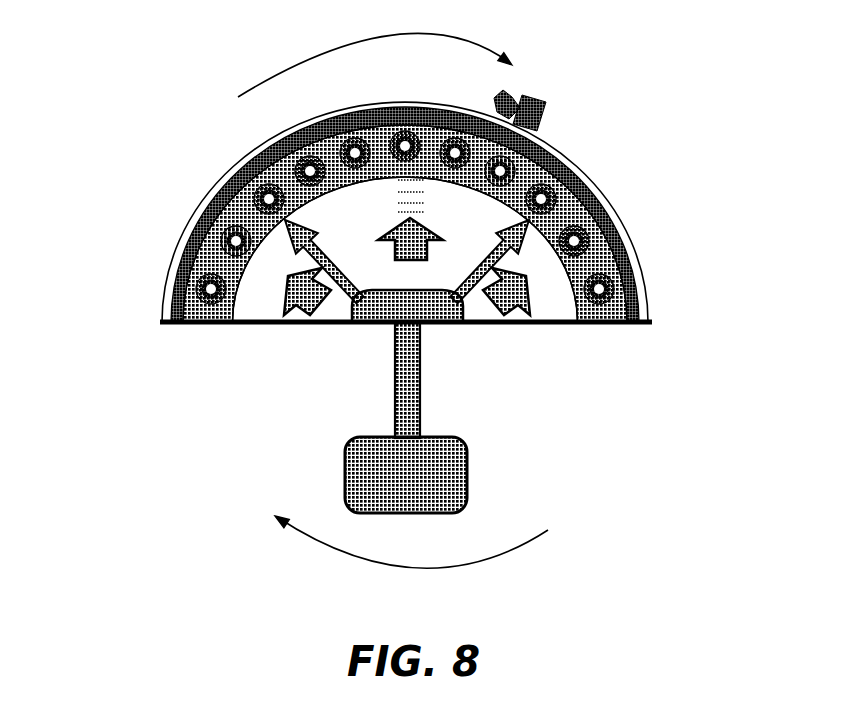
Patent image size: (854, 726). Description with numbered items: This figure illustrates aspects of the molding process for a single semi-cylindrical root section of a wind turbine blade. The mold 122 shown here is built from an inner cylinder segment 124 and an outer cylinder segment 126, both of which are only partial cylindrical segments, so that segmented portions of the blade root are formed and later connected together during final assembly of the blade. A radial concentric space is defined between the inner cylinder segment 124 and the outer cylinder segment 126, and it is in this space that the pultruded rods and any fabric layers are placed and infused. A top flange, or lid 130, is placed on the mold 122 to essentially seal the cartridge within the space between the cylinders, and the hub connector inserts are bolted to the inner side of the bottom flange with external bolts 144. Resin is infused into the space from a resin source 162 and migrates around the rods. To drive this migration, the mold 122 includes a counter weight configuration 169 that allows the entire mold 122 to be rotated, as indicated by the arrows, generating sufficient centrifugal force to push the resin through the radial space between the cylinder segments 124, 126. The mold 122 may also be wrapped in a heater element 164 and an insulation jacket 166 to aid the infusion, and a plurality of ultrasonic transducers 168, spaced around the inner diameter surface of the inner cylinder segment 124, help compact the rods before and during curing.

The mold 122 is at (645, 119).
The inner cylinder segment 124 is at (315, 203).
The outer cylinder segment 126 is at (250, 170).
The top flange (lid) 130 is at (207, 258).
The external bolts 144 is at (578, 240).
The resin source 162 is at (365, 325).
The heater element 164 is at (172, 300).
The insulation jacket 166 is at (647, 293).
The ultrasonic transducers 168 is at (503, 313).
The counter weight configuration 169 is at (467, 475).